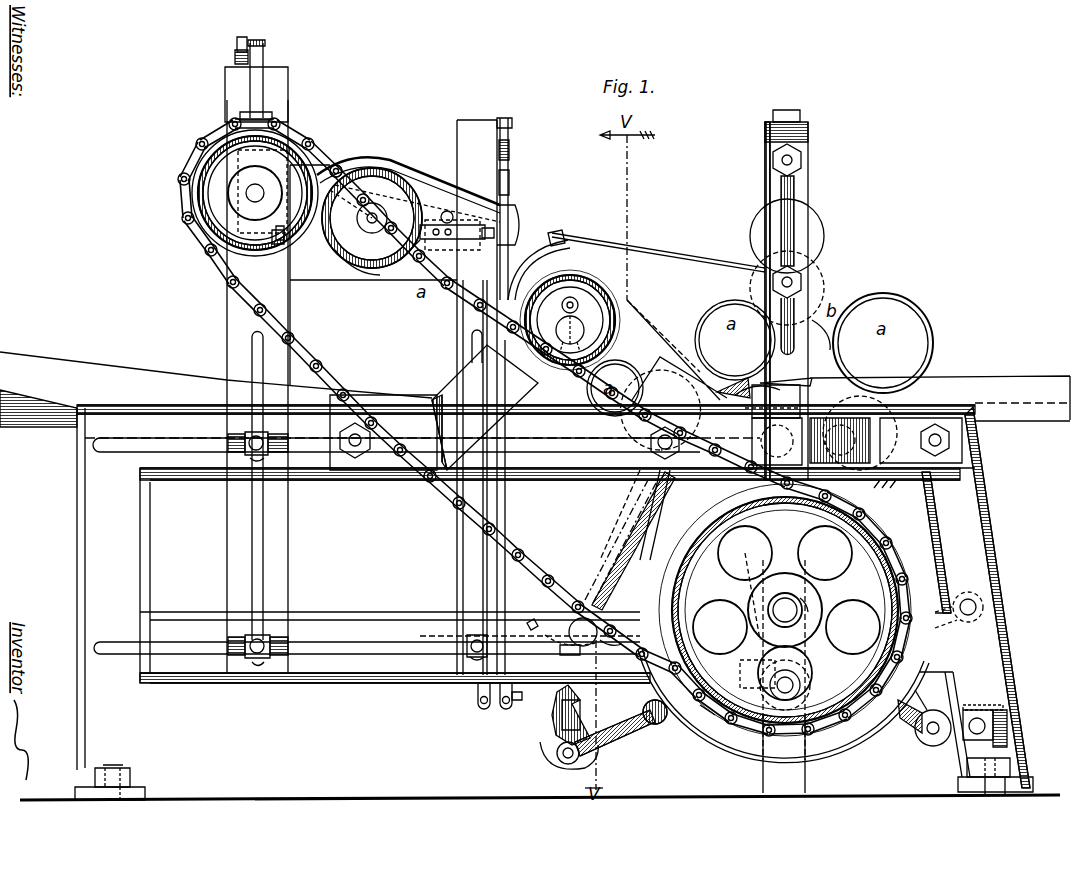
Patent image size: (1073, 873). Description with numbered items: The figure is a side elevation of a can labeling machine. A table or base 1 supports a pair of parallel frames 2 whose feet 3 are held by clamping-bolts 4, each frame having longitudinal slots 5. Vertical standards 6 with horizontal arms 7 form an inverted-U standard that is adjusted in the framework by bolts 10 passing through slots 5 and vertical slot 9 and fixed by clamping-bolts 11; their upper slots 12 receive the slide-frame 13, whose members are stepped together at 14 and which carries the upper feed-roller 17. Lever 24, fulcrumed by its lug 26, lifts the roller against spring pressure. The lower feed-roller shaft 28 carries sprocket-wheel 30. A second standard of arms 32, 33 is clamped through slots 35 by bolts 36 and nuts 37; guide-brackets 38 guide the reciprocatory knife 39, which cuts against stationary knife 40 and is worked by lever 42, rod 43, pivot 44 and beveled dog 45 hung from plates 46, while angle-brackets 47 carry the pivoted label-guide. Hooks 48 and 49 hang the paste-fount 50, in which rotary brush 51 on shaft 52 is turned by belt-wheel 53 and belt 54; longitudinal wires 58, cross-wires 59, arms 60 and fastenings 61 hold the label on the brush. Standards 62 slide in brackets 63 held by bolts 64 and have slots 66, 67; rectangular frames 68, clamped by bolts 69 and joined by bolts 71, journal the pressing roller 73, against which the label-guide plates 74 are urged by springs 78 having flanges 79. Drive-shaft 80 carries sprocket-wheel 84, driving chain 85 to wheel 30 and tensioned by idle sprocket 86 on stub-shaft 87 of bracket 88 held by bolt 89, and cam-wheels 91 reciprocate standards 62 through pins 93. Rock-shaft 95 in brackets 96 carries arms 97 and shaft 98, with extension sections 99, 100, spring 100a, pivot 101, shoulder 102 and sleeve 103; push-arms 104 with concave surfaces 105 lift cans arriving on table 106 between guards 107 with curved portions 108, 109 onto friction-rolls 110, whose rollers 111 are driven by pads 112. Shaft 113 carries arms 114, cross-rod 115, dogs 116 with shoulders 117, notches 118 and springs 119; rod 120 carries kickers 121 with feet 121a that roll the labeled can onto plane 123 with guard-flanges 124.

The table or base 1 is at (370, 796).
The parallel frames 2 is at (392, 612).
The feet or flanges 3 is at (960, 782).
The clamping-bolts 4 is at (994, 760).
The horizontal slots 5 is at (126, 647).
The vertical standards 6 is at (227, 333).
The horizontal arms 7 is at (288, 78).
The vertical slot 9 is at (250, 543).
The bolts 10 is at (259, 640).
The clamping-bolts 11 is at (246, 658).
The vertical slots 12 is at (240, 112).
The inverted-U-shaped frame 13 is at (256, 84).
The stepped joint 14 is at (258, 43).
The upper feed-roller 17 is at (255, 171).
The lever 24 is at (237, 48).
The lug 26 is at (235, 60).
The shaft 28 is at (252, 191).
The sprocket-wheel 30 is at (284, 195).
The vertical arms 32 is at (462, 331).
The horizontal arms 33 is at (470, 124).
The vertical slots 35 is at (471, 547).
The bolts 36 is at (473, 637).
The clamping-nuts 37 is at (467, 655).
The guide-brackets 38 is at (510, 130).
The reciprocatory knife 39 is at (499, 180).
The stationary knife 40 is at (478, 244).
The lever 42 is at (499, 153).
The vertical rod 43 is at (517, 512).
The pivotal connection 44 is at (505, 704).
The beveled dog 45 is at (519, 702).
The plates 46 is at (482, 704).
The angle-brackets 47 is at (515, 228).
The upwardly-disposed hooks 48 is at (450, 246).
The downwardly-disposed hooks 49 is at (282, 231).
The paste-fount 50 is at (373, 275).
The rotary brush 51 is at (400, 155).
The shaft 52 is at (370, 215).
The belt-wheel 53 is at (372, 218).
The belt 54 is at (357, 260).
The longitudinal wires 58 is at (416, 175).
The cross-wires 59 is at (428, 180).
The vertical arms 60 is at (338, 168).
The securing point 61 is at (405, 262).
The vertical standards 62 is at (765, 188).
The brackets 63 is at (811, 441).
The clamping-bolts 64 is at (645, 450).
The vertical slots 66 is at (750, 552).
The vertical slots 67 is at (795, 195).
The rectangular frames 68 is at (786, 132).
The bolts 69 is at (792, 282).
The bolts 71 is at (800, 116).
The roller 73 is at (820, 238).
The forwardly-tapering plates 74 is at (686, 256).
The springs 78 is at (539, 270).
The side flanges 79 is at (565, 240).
The drive-shaft 80 is at (788, 610).
The sprocket-wheel 84 is at (797, 644).
The power-transmitting chain 85 is at (523, 557).
The idle sprocket-wheel 86 is at (564, 322).
The stub-shaft 87 is at (578, 322).
The bracket 88 is at (485, 407).
The clamping-bolt 89 is at (355, 447).
The grooved cam-wheels 91 is at (739, 736).
The pins 93 is at (795, 673).
The rock-shaft 95 is at (931, 720).
The brackets 96 is at (930, 740).
The parallel arms 97 is at (893, 718).
The transverse shaft 98 is at (579, 652).
The extension-arm section 99 is at (611, 645).
The extension-arm section 100 is at (558, 625).
The spring 100a is at (532, 628).
The pivot 101 is at (557, 644).
The shoulder 102 is at (592, 600).
The sleeve 103 is at (738, 633).
The push-arms 104 is at (606, 558).
The concave surfaces 105 is at (672, 362).
The inclined plane or table 106 is at (38, 418).
The side guards 107 is at (52, 384).
The curved extension 108 is at (718, 390).
The curved guard portion 109 is at (756, 382).
The friction-rolls 110 is at (776, 397).
The rollers 111 is at (897, 486).
The peripheral pads 112 is at (836, 752).
The shaft 113 is at (968, 600).
The arms 114 is at (715, 715).
The cross-rod 115 is at (563, 762).
The dogs 116 is at (551, 750).
The beveled shoulders 117 is at (576, 706).
The recesses or notches 118 is at (584, 717).
The springs 119 is at (604, 715).
The rod 120 is at (640, 714).
The kicker arms 121 is at (655, 700).
The foot portions 121a is at (777, 400).
The inclined plane 123 is at (1045, 421).
The guard-flanges 124 is at (1028, 378).